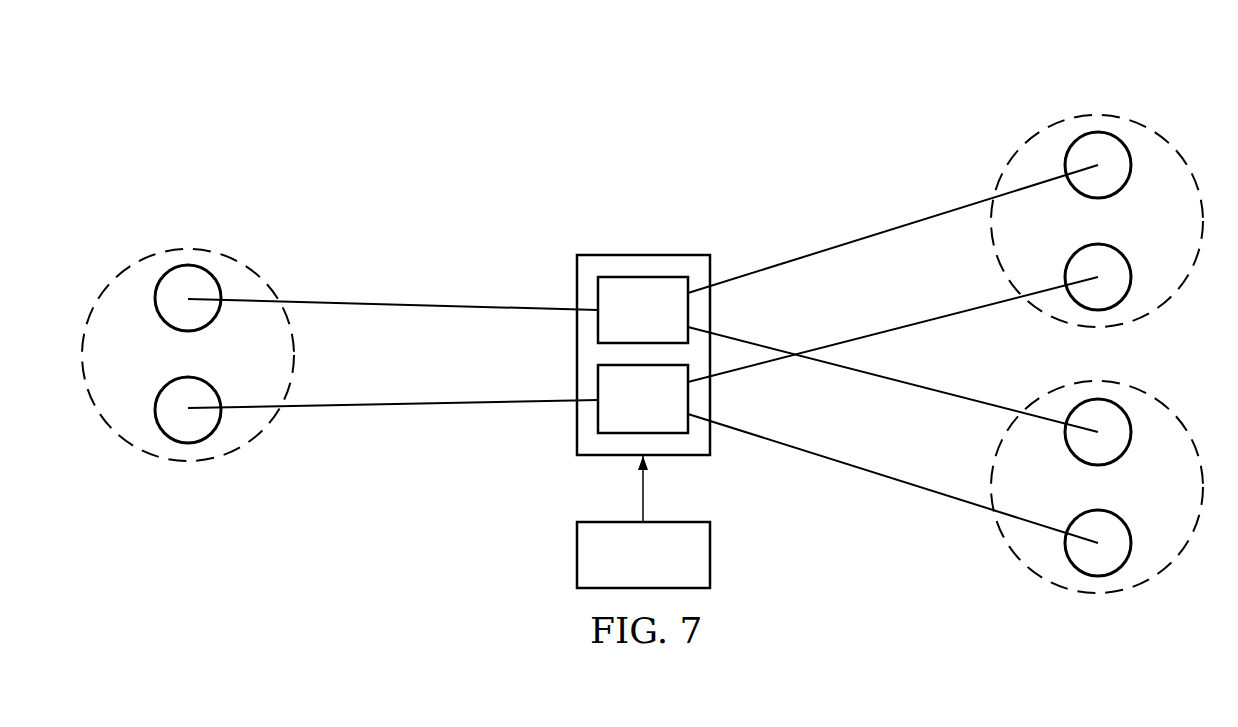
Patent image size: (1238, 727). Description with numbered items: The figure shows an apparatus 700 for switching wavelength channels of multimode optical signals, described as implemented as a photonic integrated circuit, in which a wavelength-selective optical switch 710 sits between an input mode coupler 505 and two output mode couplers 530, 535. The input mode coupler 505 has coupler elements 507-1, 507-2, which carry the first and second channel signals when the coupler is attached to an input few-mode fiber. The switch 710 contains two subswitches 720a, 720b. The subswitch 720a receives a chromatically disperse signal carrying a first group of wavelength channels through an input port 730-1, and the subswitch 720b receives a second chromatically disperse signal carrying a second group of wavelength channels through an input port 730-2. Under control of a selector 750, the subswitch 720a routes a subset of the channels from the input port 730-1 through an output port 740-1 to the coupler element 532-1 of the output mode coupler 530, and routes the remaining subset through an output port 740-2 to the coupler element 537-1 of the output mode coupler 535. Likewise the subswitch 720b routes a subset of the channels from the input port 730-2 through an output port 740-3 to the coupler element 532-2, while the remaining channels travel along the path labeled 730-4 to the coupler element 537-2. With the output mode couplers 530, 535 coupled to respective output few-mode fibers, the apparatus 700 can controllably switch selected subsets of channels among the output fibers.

The apparatus 700 is at (525, 160).
The input mode coupler 505 is at (157, 250).
The coupler element 507-1 is at (158, 322).
The coupler element 507-2 is at (215, 387).
The input port 730-1 is at (300, 298).
The input port 730-2 is at (423, 403).
The optical fiber path carrying wavelengths λ23, λ24...λ2N 730-4 is at (840, 463).
The wavelength-selective optical switch 710 is at (613, 253).
The subswitch 720a is at (614, 324).
The subswitch 720b is at (614, 413).
The selector 750 is at (620, 570).
The output port 740-1 is at (760, 268).
The output port 740-2 is at (747, 341).
The output port 740-3 is at (745, 368).
The output mode coupler 530 is at (1122, 117).
The coupler element 532-1 is at (1075, 193).
The coupler element 532-2 is at (1128, 253).
The output mode coupler 535 is at (1115, 595).
The coupler element 537-1 is at (1127, 453).
The coupler element 537-2 is at (1083, 513).